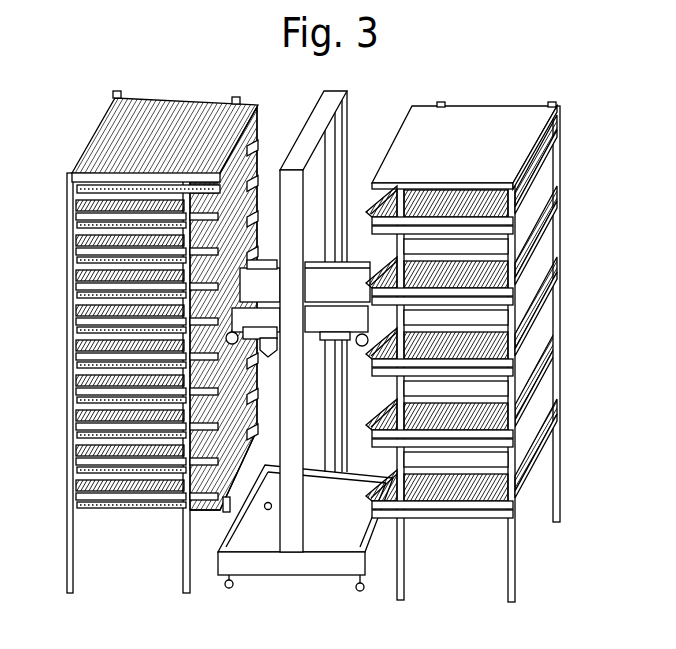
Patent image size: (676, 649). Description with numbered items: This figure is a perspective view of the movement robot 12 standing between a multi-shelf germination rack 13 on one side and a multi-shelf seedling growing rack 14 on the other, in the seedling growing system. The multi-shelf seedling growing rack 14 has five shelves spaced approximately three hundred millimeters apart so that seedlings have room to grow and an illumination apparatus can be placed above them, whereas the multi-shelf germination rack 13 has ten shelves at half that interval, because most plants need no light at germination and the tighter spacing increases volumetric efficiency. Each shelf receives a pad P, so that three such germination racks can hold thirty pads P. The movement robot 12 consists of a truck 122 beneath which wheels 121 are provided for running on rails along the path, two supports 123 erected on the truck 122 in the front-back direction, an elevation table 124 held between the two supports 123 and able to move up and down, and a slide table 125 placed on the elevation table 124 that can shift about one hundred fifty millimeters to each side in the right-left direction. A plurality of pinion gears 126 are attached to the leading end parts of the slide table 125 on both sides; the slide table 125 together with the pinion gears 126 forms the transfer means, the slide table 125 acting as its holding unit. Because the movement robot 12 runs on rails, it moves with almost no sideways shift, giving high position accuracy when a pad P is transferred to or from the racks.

The movement robot 12 is at (422, 351).
The multi-shelf germination rack 13 is at (70, 146).
The multi-shelf seedling growing rack 14 is at (576, 131).
The pad P is at (113, 122).
The wheels 121 is at (360, 592).
The truck 122 is at (325, 568).
The supports 123 is at (290, 525).
The elevation table 124 is at (372, 328).
The slide table 125 is at (347, 287).
The pinion gears 126 is at (365, 348).